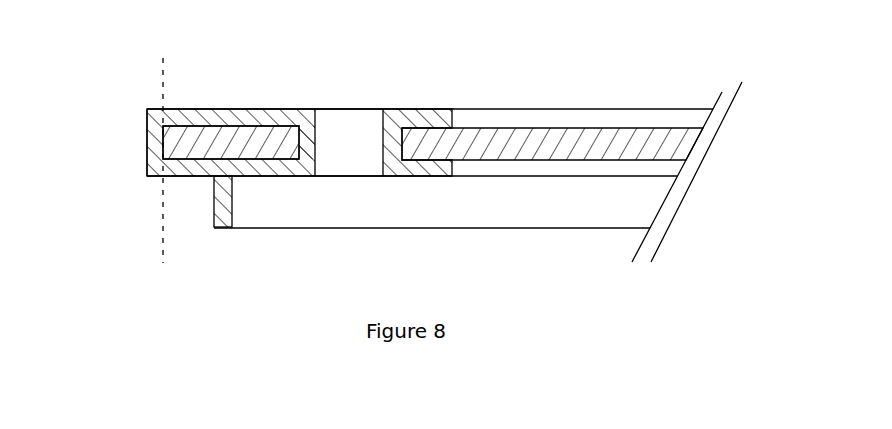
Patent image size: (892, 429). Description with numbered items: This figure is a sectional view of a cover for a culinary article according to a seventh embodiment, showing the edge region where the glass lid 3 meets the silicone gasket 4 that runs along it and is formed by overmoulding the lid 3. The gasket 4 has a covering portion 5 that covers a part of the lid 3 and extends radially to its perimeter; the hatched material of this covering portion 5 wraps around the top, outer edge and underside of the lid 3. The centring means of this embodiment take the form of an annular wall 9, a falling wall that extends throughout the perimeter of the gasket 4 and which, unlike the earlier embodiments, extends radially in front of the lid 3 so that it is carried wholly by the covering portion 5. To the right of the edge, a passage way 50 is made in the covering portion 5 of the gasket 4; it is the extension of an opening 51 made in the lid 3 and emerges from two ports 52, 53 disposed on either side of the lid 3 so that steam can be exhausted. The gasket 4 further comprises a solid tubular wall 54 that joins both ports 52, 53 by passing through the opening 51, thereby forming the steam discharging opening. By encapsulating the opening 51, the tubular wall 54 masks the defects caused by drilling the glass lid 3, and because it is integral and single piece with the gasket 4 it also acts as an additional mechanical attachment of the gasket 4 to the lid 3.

The lid 3 is at (254, 136).
The gasket 4 is at (144, 182).
The covering portion 5 is at (204, 108).
The annular wall 9 is at (230, 197).
The passage way 50 is at (347, 136).
The opening 51 is at (405, 153).
The port 52 is at (335, 107).
The port 53 is at (335, 177).
The tubular wall 54 is at (301, 143).